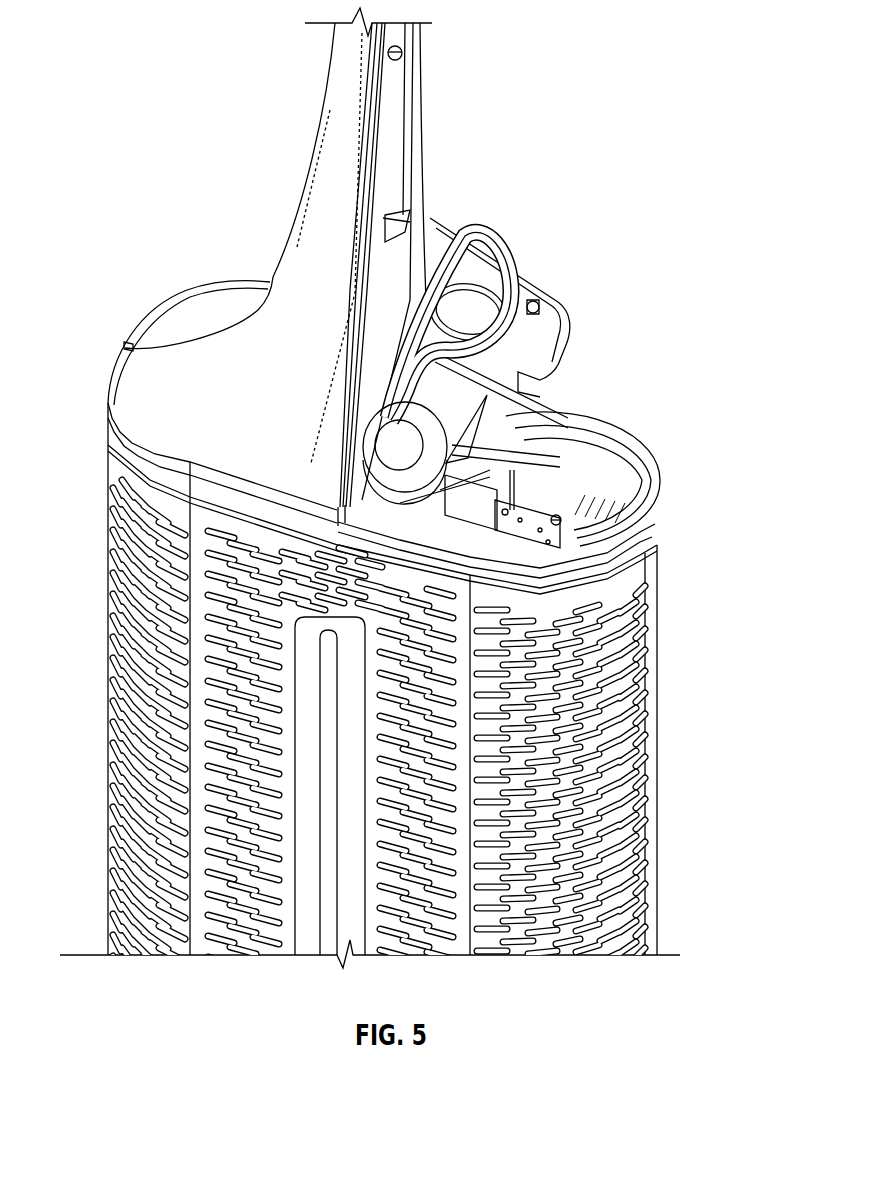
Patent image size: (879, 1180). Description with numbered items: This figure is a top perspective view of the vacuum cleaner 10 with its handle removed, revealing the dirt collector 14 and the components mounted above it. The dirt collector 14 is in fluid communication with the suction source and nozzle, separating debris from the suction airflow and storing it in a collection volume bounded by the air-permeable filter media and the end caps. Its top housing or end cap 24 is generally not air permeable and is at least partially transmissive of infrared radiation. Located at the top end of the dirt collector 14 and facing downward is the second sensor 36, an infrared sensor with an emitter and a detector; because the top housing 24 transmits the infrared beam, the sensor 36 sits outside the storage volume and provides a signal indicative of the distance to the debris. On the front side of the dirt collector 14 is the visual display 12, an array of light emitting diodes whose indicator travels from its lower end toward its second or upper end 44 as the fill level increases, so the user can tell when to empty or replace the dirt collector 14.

The vacuum cleaner 10 is at (157, 188).
The visual display 12 is at (327, 923).
The dirt collector 14 is at (110, 600).
The top housing or end cap 24 is at (598, 532).
The second sensor 36 is at (562, 517).
The second or upper end 44 is at (297, 620).